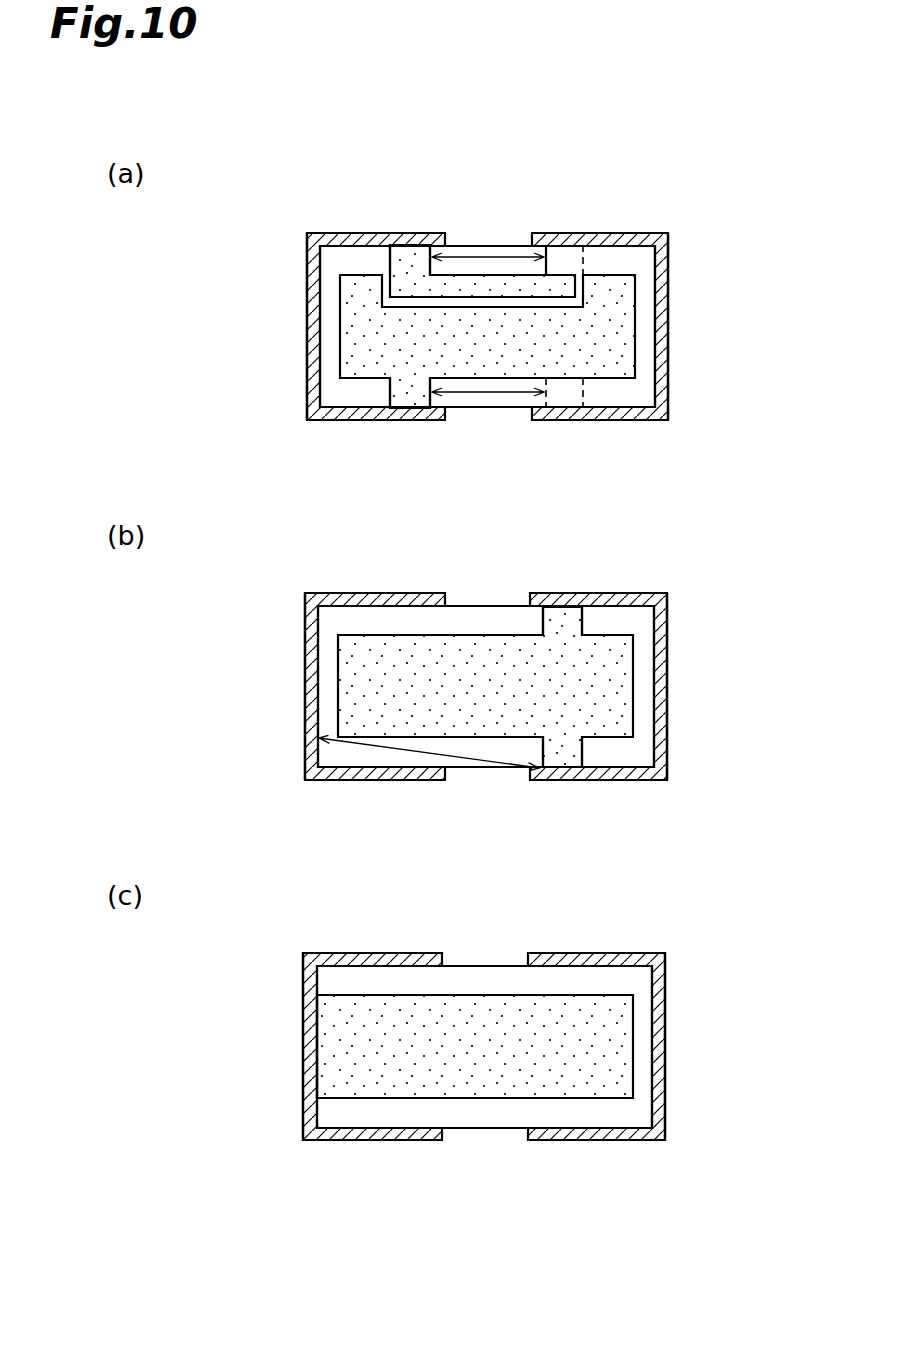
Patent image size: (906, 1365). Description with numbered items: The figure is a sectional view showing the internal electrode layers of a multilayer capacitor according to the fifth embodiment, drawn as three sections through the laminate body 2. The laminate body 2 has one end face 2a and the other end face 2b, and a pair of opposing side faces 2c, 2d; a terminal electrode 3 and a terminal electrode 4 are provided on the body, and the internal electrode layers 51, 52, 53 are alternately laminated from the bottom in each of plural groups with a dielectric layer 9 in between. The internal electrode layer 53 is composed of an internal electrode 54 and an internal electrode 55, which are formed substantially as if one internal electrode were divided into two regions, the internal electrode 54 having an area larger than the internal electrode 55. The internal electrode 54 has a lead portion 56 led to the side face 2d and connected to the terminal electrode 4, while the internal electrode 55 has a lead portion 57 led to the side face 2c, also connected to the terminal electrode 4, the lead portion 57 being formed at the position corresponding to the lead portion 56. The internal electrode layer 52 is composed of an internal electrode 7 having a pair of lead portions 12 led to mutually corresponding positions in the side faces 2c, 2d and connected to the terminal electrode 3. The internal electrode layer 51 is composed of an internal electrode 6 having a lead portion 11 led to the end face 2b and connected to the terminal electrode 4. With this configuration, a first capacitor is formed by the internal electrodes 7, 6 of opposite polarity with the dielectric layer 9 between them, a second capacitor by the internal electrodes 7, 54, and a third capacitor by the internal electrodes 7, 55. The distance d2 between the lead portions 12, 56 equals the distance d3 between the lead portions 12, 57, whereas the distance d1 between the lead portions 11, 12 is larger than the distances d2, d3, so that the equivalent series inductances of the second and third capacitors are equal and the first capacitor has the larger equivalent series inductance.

The laminate body 2 is at (512, 240).
The end face 2a is at (663, 350).
The end face 2b is at (308, 367).
The side face 2c is at (488, 245).
The side face 2d is at (487, 408).
The terminal electrode 3 is at (665, 297).
The terminal electrode 4 is at (310, 275).
The dielectric layer 9 is at (350, 258).
The internal electrode 6 is at (363, 1013).
The internal electrode 7 is at (373, 653).
The lead portion 11 is at (327, 1048).
The lead portion 12 is at (573, 622).
The internal electrode layer 51 is at (600, 1102).
The internal electrode layer 52 is at (613, 742).
The internal electrode layer 53 is at (601, 380).
The internal electrode 54 is at (410, 337).
The internal electrode 55 is at (563, 283).
The lead portion 56 is at (397, 392).
The lead portion 57 is at (403, 258).
The distance d1 is at (468, 762).
The distance d2 is at (475, 392).
The distance d3 is at (472, 257).